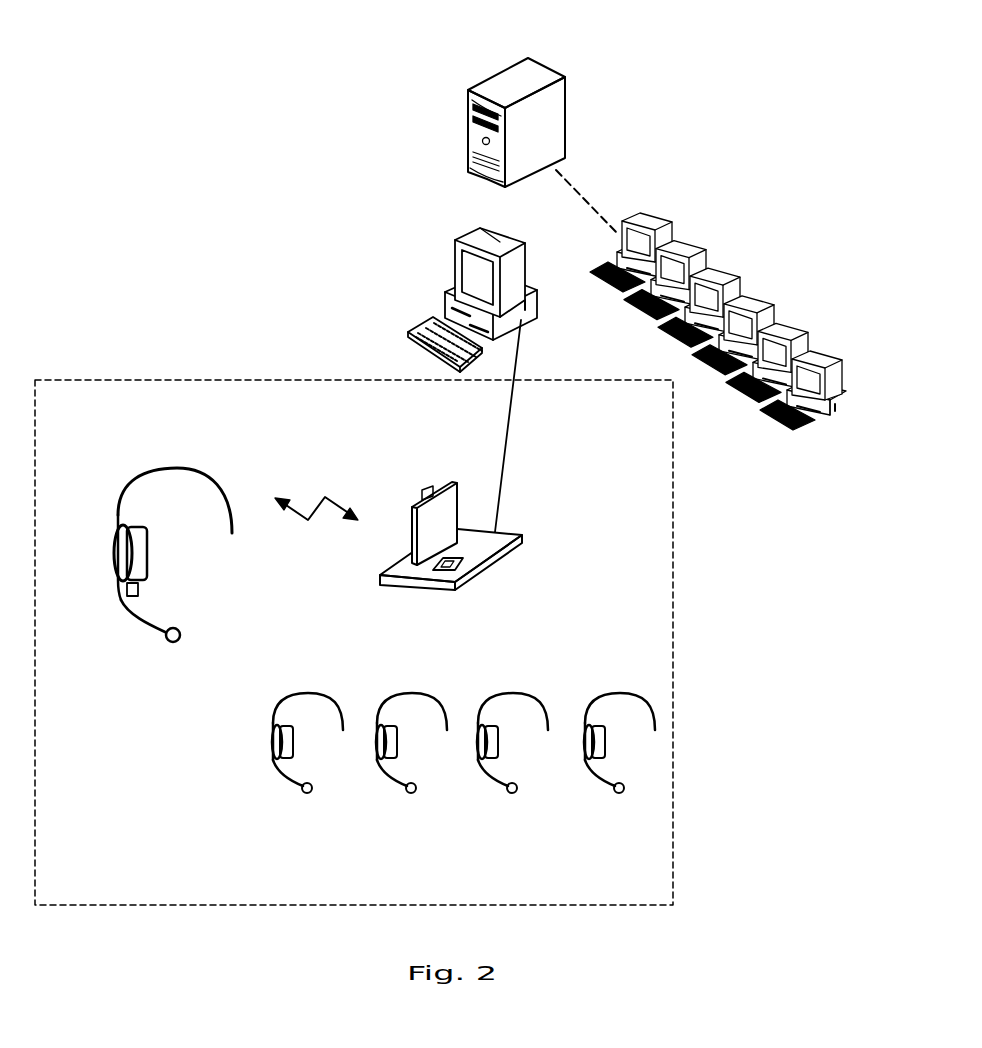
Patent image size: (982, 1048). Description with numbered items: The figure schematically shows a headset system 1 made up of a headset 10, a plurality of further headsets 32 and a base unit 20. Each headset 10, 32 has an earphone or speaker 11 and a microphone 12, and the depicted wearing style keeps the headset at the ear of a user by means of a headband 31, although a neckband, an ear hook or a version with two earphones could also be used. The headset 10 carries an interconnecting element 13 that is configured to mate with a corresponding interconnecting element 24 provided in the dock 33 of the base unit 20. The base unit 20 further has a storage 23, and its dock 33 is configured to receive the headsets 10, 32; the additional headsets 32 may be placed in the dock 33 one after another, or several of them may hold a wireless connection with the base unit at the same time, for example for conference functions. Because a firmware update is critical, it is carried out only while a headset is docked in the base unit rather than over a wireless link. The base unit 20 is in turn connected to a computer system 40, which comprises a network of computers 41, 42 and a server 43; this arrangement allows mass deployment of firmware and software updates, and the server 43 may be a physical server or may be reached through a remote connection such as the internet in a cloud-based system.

The headset system 1 is at (686, 638).
The headset 10 is at (230, 458).
The earphone or speaker 11 is at (120, 513).
The microphone 12 is at (170, 643).
The interconnecting element 13 is at (132, 605).
The base unit 20 is at (467, 573).
The storage 23 is at (470, 546).
The interconnecting element 24 is at (422, 493).
The headband 31 is at (158, 468).
The headsets 32 is at (48, 812).
The dock 33 is at (410, 538).
The computer system 40 is at (362, 136).
The computer 41 is at (450, 250).
The computers 42 is at (662, 215).
The server 43 is at (543, 65).